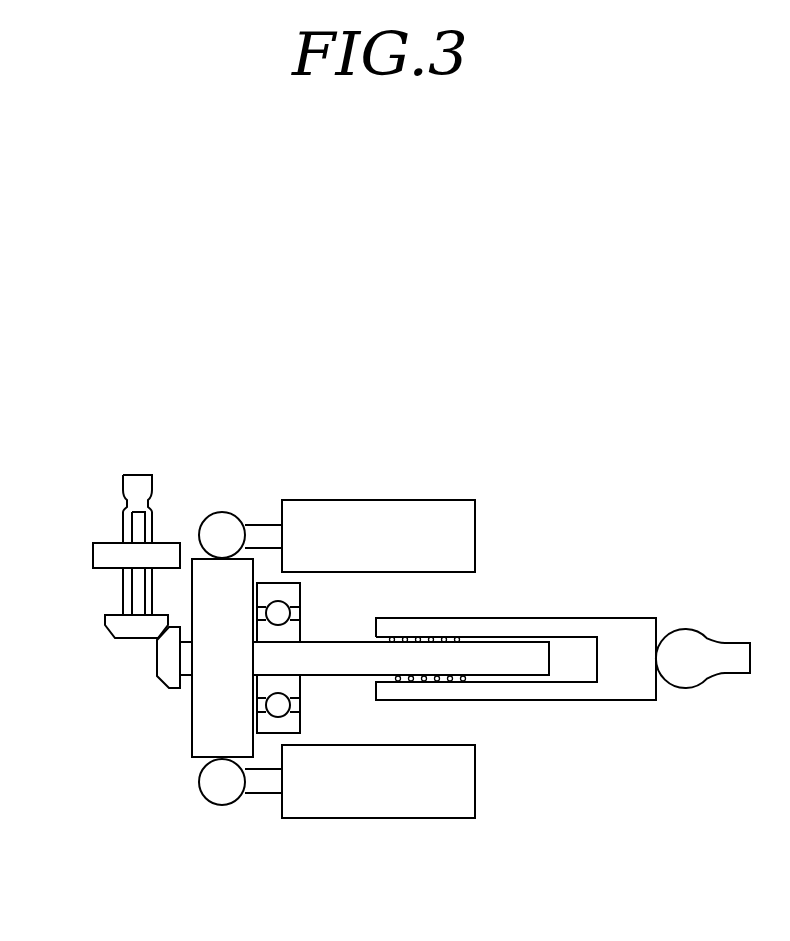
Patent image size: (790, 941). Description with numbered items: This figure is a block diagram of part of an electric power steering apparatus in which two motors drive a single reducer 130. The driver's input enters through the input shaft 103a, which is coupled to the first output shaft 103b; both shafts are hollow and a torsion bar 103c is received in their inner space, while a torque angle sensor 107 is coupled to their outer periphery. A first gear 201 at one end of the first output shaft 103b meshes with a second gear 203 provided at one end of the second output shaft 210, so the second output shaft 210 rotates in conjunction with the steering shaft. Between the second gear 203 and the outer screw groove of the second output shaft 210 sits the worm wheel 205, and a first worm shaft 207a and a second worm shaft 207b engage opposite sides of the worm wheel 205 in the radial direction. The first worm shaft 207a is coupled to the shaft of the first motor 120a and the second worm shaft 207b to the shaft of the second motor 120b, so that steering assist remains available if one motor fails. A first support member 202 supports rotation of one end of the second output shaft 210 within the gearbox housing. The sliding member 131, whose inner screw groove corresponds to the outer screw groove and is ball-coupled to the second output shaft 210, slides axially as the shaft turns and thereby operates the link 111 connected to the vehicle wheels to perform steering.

The input shaft 103a is at (140, 483).
The first output shaft 103b is at (127, 590).
The torsion bar 103c is at (138, 528).
The torque angle sensor 107 is at (100, 553).
The first gear 201 is at (122, 630).
The second gear 203 is at (168, 660).
The worm wheel 205 is at (202, 722).
The first worm shaft 207a is at (218, 523).
The second worm shaft 207b is at (222, 785).
The first motor 120a is at (377, 510).
The second motor 120b is at (380, 798).
The first support member 202 is at (293, 704).
The second output shaft 210 is at (508, 655).
The sliding member 131 is at (573, 692).
The link 111 is at (730, 650).
The reducer 130 is at (165, 781).